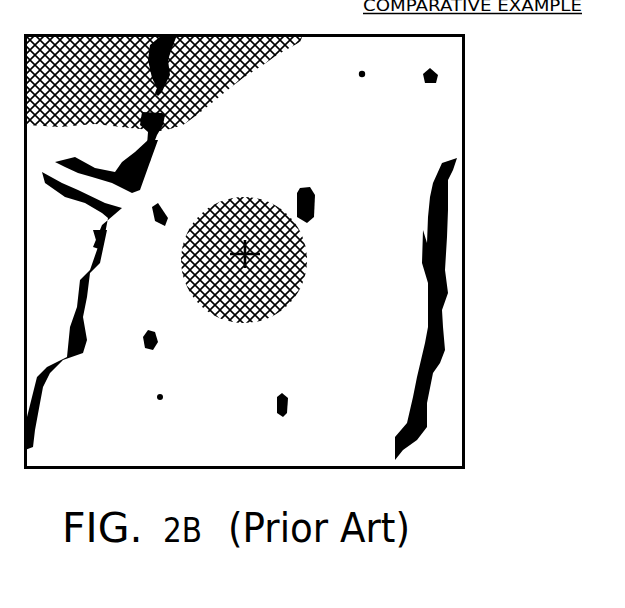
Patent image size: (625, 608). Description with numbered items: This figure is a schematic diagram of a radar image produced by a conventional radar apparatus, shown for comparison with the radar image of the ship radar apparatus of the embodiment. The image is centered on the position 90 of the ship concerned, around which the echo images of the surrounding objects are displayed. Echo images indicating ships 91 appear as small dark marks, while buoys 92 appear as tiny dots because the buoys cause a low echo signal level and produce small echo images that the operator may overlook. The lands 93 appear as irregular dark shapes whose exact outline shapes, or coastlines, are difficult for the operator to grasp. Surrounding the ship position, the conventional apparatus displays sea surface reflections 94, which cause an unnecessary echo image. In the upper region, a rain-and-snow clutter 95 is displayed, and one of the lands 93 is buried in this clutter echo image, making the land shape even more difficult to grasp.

The position of the ship concerned 90 is at (257, 256).
The ships 91 is at (428, 82).
The buoys 92 is at (359, 74).
The lands 93 is at (153, 152).
The sea surface reflections 94 is at (253, 327).
The rain-and-snow clutter 95 is at (230, 92).